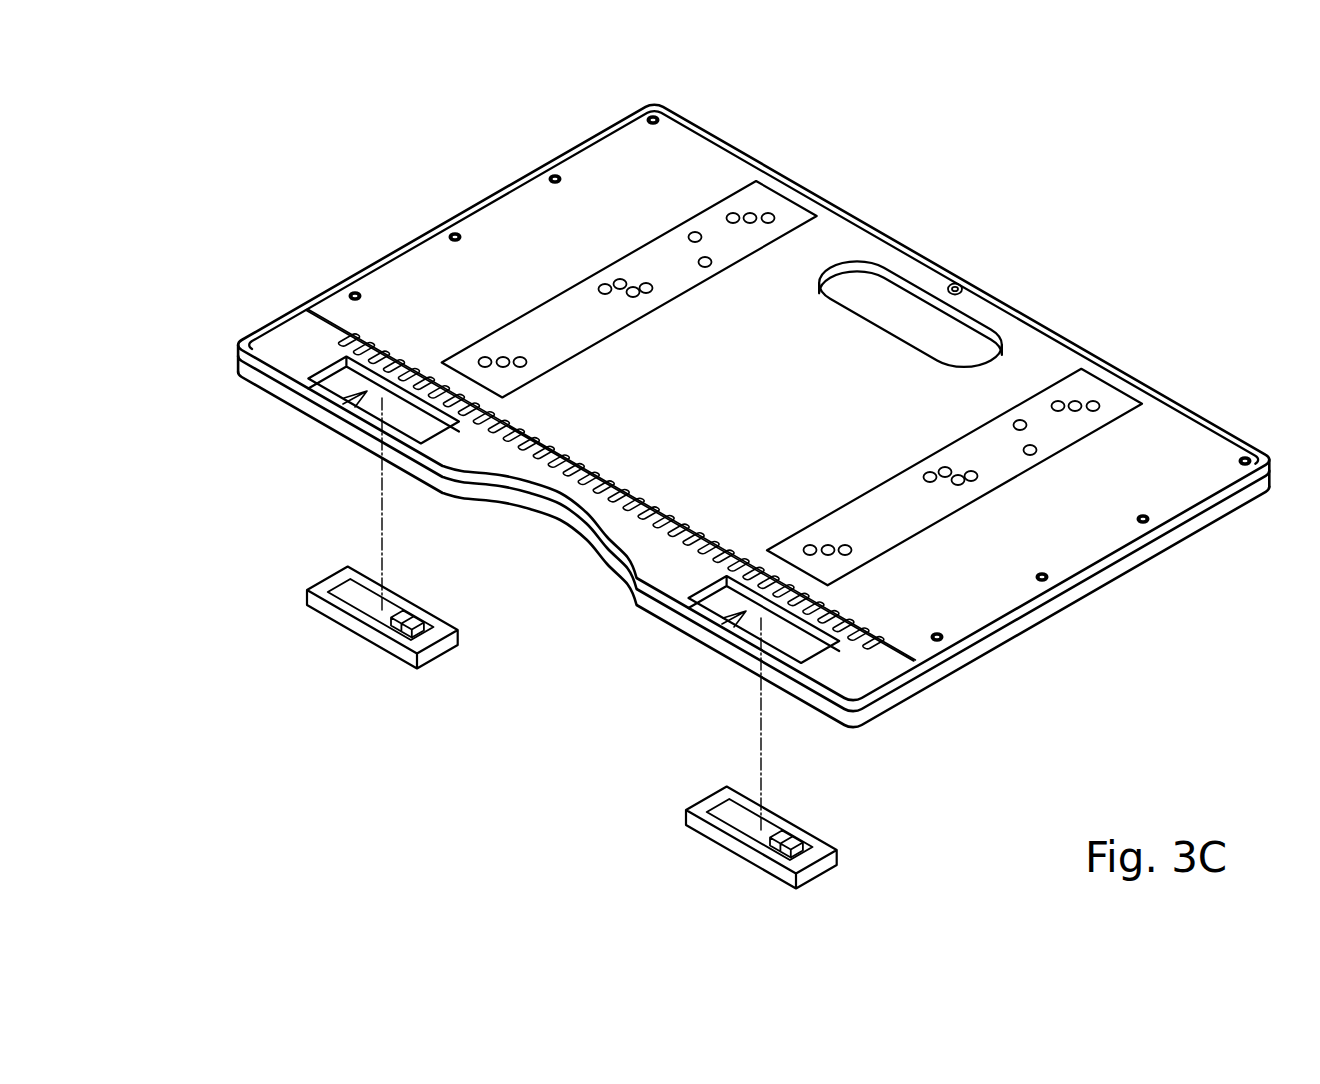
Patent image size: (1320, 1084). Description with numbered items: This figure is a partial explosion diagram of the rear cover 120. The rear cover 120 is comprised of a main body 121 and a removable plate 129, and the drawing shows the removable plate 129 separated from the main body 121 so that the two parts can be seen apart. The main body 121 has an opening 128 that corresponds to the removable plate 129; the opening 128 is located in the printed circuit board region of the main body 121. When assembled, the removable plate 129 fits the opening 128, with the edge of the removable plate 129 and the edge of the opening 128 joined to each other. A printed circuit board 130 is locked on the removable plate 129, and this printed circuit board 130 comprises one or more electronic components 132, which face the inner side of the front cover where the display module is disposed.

The rear cover 120 is at (151, 111).
The main body 121 is at (1130, 378).
The opening 128 is at (347, 398).
The removable plate 129 is at (308, 598).
The printed circuit board 130 is at (356, 589).
The electronic components 132 is at (413, 618).